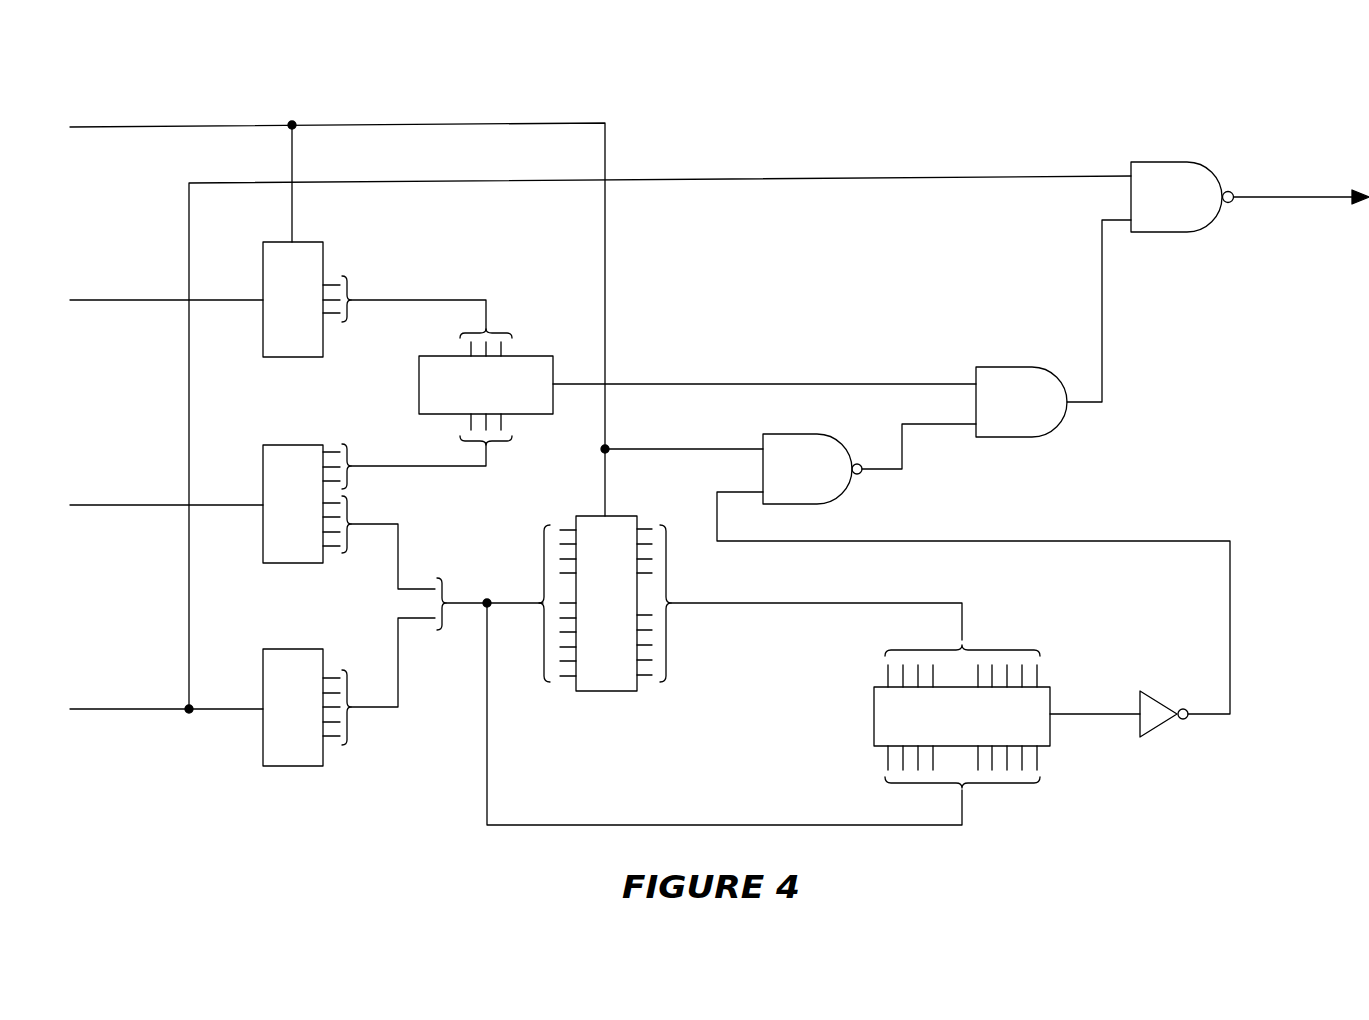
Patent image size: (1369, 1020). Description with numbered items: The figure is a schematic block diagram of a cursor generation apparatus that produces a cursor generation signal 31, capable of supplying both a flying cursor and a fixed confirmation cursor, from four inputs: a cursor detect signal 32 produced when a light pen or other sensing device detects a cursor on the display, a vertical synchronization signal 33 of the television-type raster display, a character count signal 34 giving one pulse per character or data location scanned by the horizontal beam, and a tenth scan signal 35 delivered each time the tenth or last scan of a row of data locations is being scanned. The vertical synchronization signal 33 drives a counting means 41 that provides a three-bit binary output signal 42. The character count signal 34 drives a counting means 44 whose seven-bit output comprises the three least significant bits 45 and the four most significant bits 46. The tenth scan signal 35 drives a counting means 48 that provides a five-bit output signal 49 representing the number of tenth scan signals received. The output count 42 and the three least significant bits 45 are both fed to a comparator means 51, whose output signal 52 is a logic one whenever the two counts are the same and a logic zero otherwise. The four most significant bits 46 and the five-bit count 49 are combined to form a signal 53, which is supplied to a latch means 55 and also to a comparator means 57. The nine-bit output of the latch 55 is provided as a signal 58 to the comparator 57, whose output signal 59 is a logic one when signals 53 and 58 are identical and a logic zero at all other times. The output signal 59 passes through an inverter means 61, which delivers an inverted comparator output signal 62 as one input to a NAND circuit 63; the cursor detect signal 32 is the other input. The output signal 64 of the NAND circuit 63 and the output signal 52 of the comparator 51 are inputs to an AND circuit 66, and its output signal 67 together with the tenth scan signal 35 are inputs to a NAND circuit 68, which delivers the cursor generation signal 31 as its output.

The cursor generation signal 31 is at (1274, 196).
The cursor detect signal 32 is at (112, 128).
The vertical synchronization signal 33 is at (112, 302).
The character count signal 34 is at (112, 507).
The tenth scan signal 35 is at (112, 712).
The counting means 41 is at (326, 254).
The three-bit binary output signal 42 is at (443, 299).
The counting means 44 is at (293, 445).
The three least significant bits 45 is at (445, 468).
The four most significant bits 46 is at (398, 562).
The counting means 48 is at (294, 649).
The five-bit output signal 49 is at (398, 665).
The comparator means 51 is at (528, 356).
The output signal 52 is at (650, 383).
The combined signal 53 is at (480, 601).
The latch means 55 is at (622, 514).
The comparator means 57 is at (874, 702).
The latch output signal 58 is at (917, 602).
The comparator output signal 59 is at (1090, 713).
The inverter means 61 is at (1155, 728).
The inverted comparator output signal 62 is at (1230, 613).
The NAND circuit 63 is at (845, 490).
The NAND output signal 64 is at (902, 456).
The AND circuit 66 is at (1006, 367).
The AND output signal 67 is at (1102, 292).
The NAND circuit 68 is at (1157, 162).